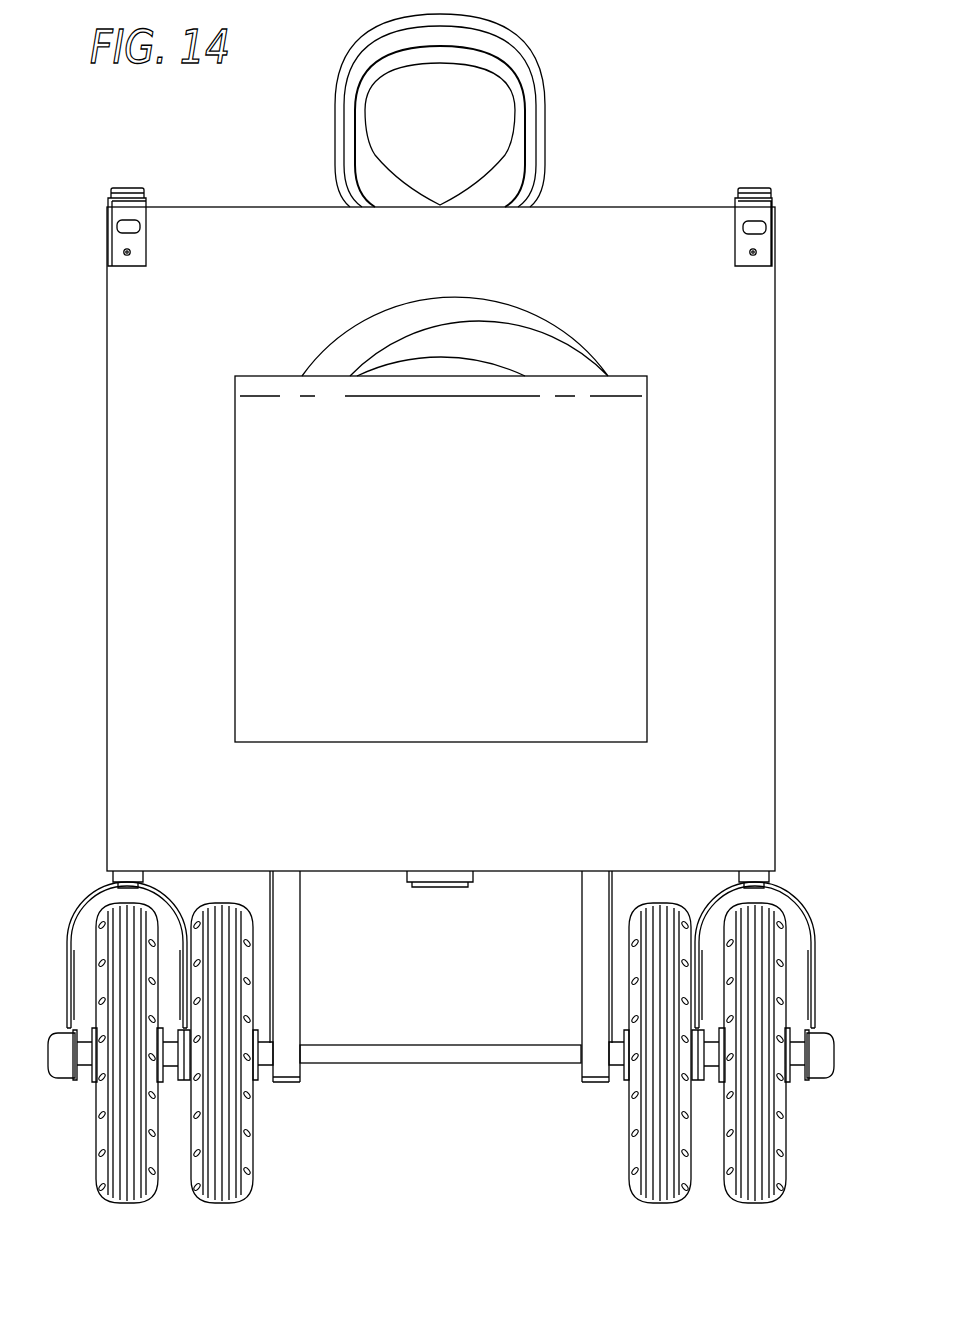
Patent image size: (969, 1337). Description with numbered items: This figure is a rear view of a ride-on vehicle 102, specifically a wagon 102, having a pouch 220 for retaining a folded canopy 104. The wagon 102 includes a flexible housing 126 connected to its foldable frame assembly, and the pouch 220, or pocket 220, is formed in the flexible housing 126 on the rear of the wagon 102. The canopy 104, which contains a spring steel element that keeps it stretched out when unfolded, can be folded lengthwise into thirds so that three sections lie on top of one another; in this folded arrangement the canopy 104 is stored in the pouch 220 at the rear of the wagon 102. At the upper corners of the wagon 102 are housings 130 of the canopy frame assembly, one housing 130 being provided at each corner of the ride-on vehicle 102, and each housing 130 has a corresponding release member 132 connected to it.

The ride-on vehicle 102 is at (711, 107).
The canopy 104 is at (527, 322).
The flexible housing 126 is at (742, 596).
The pouch 220 is at (292, 585).
The housing 130 is at (115, 210).
The release member 132 is at (118, 227).